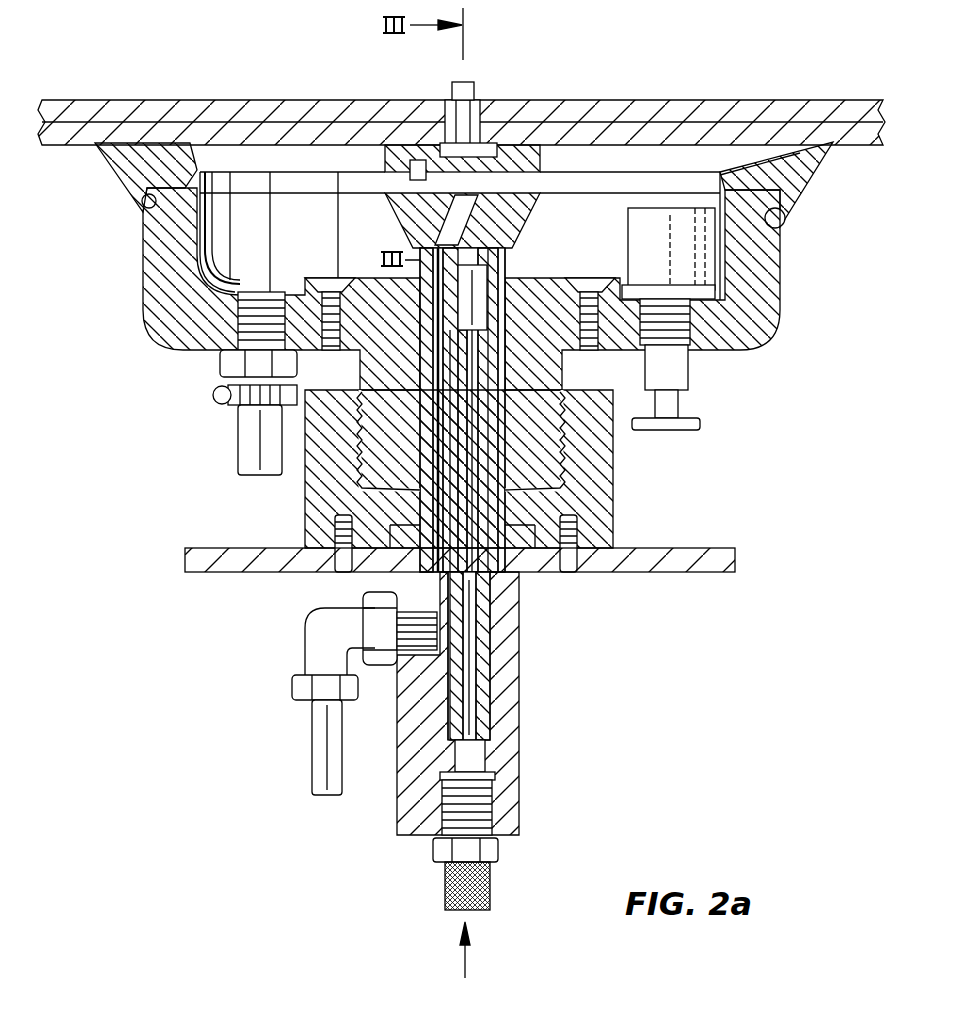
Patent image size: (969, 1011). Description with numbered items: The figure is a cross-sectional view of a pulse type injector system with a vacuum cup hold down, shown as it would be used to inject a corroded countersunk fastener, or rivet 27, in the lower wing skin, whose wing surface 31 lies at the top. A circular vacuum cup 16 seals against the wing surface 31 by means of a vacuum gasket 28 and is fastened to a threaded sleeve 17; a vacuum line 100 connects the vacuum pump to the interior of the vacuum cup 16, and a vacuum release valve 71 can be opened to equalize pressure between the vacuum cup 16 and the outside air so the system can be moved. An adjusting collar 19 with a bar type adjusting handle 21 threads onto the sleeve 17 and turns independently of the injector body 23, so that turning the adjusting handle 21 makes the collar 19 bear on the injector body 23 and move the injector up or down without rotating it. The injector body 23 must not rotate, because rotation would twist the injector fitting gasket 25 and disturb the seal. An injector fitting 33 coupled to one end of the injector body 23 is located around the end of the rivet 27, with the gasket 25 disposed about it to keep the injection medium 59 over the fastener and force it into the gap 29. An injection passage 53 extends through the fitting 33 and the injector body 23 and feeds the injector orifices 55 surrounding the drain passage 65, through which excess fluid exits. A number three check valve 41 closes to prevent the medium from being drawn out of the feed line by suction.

The vacuum cup 16 is at (143, 330).
The threaded sleeve 17 is at (305, 280).
The adjusting collar 19 is at (305, 505).
The bar type adjusting handle 21 is at (676, 574).
The injector body 23 is at (520, 790).
The injector fitting gasket 25 is at (536, 147).
The rivet 27 is at (466, 82).
The vacuum gasket 28 is at (795, 188).
The gap 29 is at (488, 142).
The wing surface 31 is at (845, 148).
The injector fitting 33 is at (535, 205).
The number three check valve 41 is at (500, 276).
The injection passage 53 is at (478, 602).
The injector orifices 55 is at (420, 160).
The injection medium 59 is at (468, 978).
The drain passage 65 is at (432, 576).
The vacuum release valve 71 is at (686, 370).
The vacuum line 100 is at (238, 438).